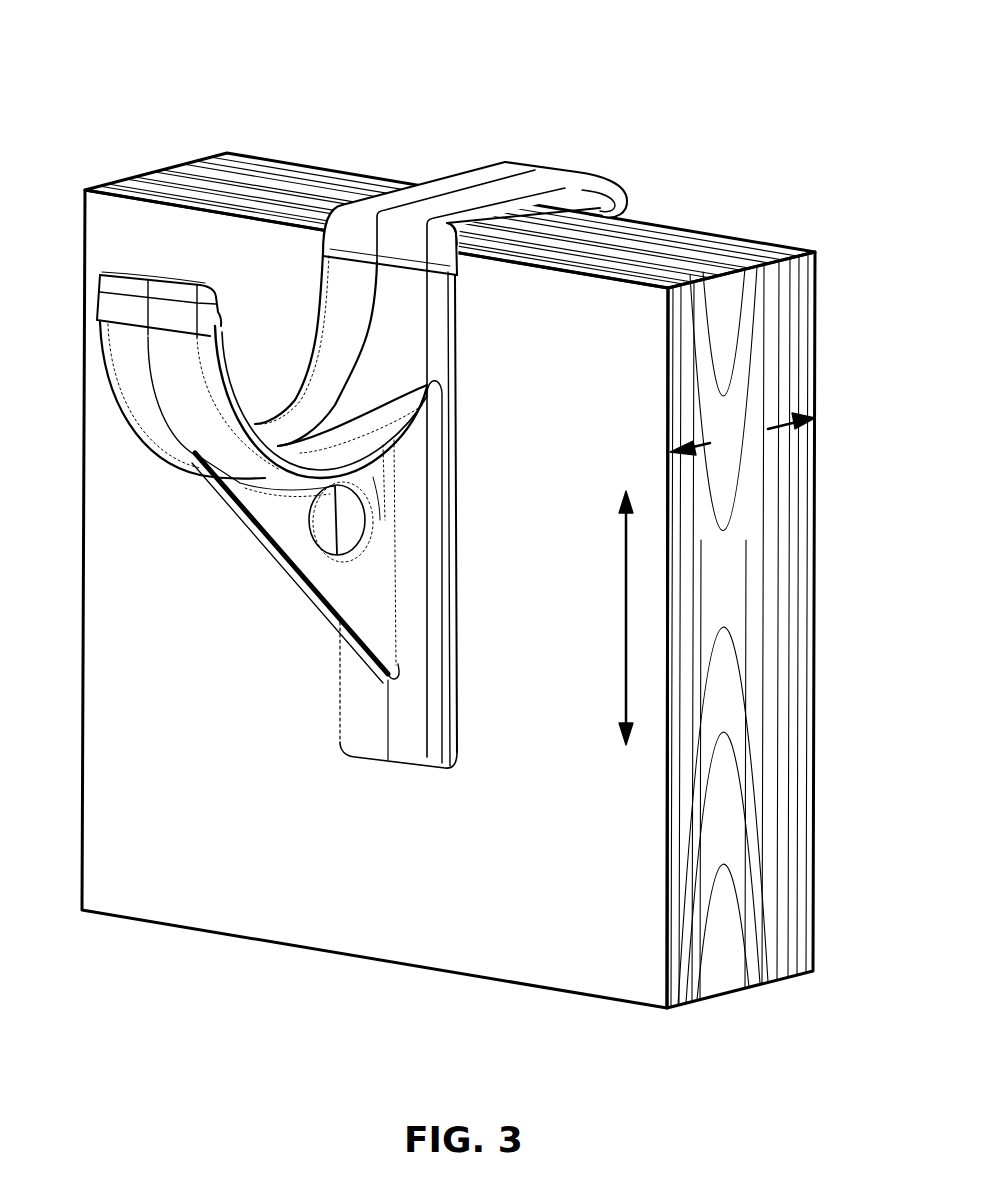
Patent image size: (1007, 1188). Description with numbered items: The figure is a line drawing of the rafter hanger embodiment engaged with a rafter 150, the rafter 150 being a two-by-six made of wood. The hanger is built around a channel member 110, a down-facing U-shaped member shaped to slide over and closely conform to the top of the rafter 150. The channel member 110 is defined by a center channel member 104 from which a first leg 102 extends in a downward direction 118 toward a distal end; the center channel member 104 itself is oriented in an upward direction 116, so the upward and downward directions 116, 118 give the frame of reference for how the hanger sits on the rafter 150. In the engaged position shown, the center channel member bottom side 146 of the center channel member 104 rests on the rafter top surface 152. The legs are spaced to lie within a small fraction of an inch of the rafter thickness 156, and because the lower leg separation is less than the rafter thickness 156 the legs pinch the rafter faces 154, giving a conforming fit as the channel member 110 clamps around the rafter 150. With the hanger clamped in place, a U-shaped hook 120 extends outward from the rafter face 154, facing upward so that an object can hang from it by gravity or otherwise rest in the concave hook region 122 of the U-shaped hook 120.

The first leg 102 is at (463, 662).
The center channel member 104 is at (486, 168).
The channel member 110 is at (382, 392).
The upward direction 116 is at (627, 586).
The downward direction 118 is at (631, 759).
The U-shaped hook 120 is at (172, 355).
The concave hook region 122 is at (285, 353).
The center channel member bottom side 146 is at (550, 226).
The rafter 150 is at (448, 550).
The rafter top surface 152 is at (287, 185).
The rafter face 154 is at (216, 869).
The rafter thickness 156 is at (742, 434).